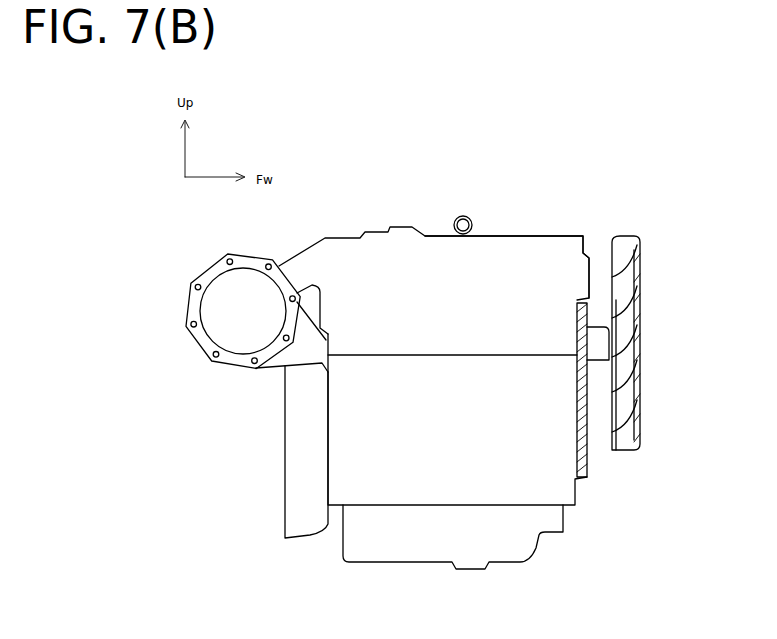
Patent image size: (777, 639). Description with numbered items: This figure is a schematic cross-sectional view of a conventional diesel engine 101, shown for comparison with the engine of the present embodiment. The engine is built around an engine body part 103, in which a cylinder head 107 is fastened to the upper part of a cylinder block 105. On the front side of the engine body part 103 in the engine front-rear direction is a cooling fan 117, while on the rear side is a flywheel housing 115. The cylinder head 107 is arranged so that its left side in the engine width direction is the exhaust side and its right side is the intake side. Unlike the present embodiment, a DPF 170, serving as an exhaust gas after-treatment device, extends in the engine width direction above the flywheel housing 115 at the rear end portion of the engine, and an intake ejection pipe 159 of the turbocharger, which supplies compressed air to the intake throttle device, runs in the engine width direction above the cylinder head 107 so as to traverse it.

The conventional diesel engine 101 is at (367, 210).
The engine body part 103 is at (500, 484).
The cylinder block 105 is at (552, 462).
The cylinder head 107 is at (538, 253).
The flywheel housing 115 is at (302, 432).
The cooling fan 117 is at (627, 392).
The intake ejection pipe 159 is at (470, 217).
The DPF 170 is at (224, 287).